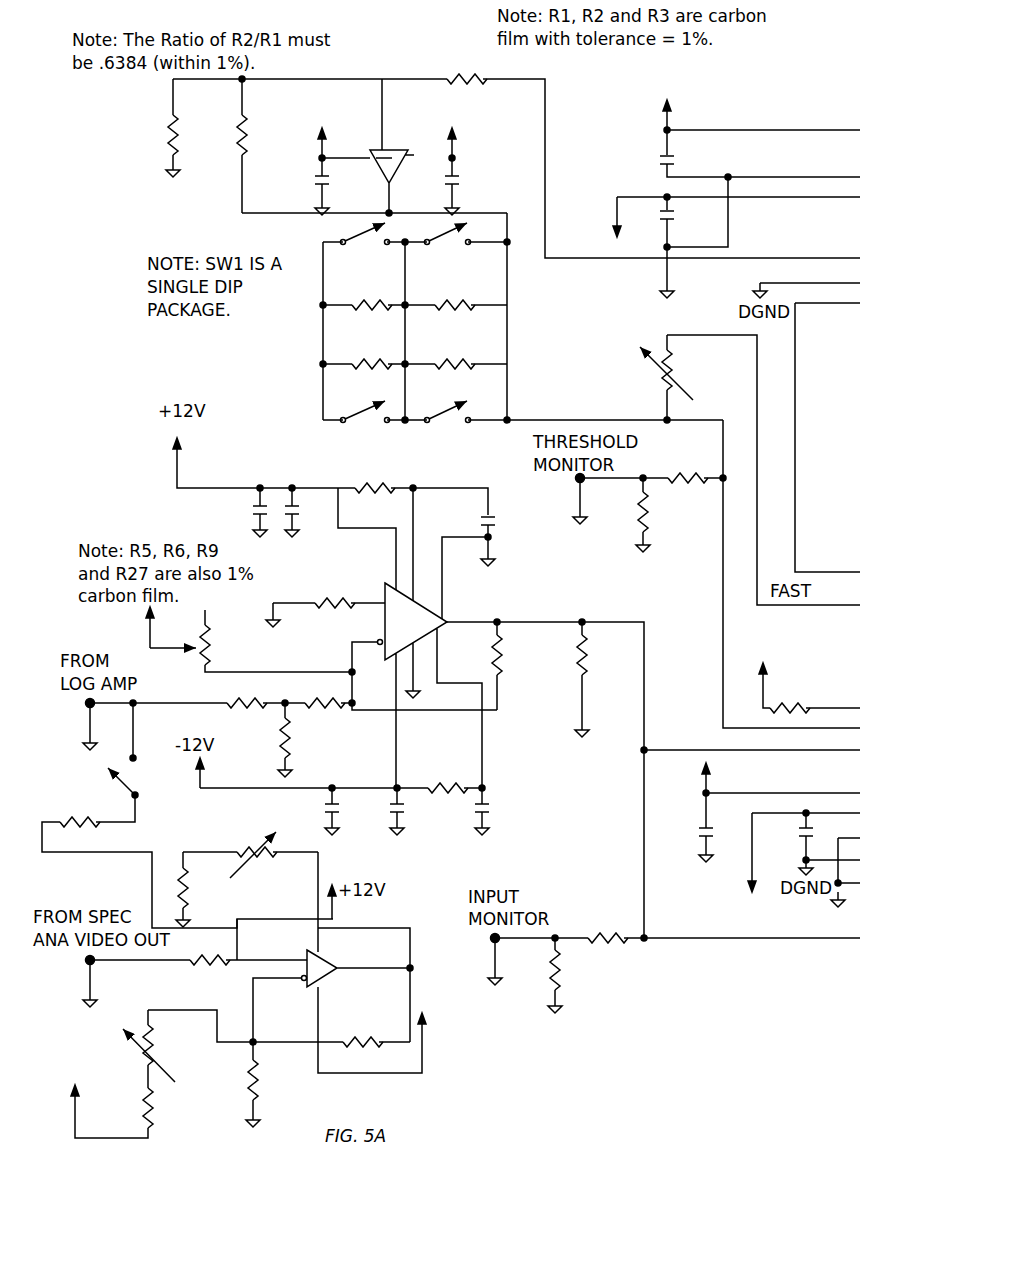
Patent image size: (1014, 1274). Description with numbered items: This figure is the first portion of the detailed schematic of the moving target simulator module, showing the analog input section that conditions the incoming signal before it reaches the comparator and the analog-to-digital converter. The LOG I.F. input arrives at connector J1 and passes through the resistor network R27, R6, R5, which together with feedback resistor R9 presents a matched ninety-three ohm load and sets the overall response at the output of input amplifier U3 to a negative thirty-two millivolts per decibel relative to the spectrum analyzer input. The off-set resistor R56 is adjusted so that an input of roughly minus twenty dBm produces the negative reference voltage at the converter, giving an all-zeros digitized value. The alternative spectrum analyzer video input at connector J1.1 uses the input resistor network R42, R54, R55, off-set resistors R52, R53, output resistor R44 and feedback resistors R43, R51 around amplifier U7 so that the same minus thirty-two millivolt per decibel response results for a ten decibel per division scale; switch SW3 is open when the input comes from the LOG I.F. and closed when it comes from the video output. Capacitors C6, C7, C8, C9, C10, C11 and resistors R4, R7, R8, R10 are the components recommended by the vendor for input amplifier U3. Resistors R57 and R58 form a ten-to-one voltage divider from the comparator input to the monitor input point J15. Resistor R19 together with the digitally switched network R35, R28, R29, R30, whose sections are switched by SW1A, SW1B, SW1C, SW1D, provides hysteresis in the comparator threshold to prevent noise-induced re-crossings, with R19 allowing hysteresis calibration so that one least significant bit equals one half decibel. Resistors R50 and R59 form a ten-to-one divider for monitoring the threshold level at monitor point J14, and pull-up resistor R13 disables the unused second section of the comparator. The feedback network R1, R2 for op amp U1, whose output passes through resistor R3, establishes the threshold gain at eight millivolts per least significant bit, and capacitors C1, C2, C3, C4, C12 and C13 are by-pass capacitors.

The feedback resistor R1 is at (150, 128).
The feedback resistor R2 is at (234, 146).
The resistor 390 R3 is at (467, 75).
The by-pass capacitor C1 is at (315, 158).
The by-pass capacitor C2 is at (456, 158).
The op amp U1 is at (372, 155).
The by-pass capacitor C3 is at (738, 171).
The by-pass capacitor C4 is at (710, 237).
The DIP switch section B SW1B is at (365, 259).
The DIP switch section A SW1A is at (447, 259).
The hysteresis resistor R28 is at (370, 328).
The hysteresis resistor R35 is at (453, 328).
The hysteresis resistor R29 is at (370, 376).
The hysteresis resistor R30 is at (453, 376).
The DIP switch section C SW1C is at (367, 426).
The DIP switch section D SW1D is at (451, 426).
The hysteresis calibration resistor R19 is at (716, 470).
The threshold monitor connector J14 is at (620, 499).
The voltage divider resistor R50 is at (695, 480).
The voltage divider resistor R59 is at (640, 513).
The capacitor C6 is at (243, 512).
The capacitor C7 is at (304, 512).
The resistor R7 is at (375, 488).
The capacitor C8 is at (501, 533).
The input amplifier U3 is at (450, 669).
The resistor R4 is at (325, 606).
The feedback resistor R9 is at (491, 664).
The resistor R10 is at (586, 678).
The off-set resistor R56 is at (249, 639).
The SMA input connector from log amp J1 is at (134, 716).
The load network resistor R27 is at (265, 706).
The load network resistor R5 is at (328, 706).
The load network resistor R6 is at (280, 740).
The switch SW3 is at (131, 762).
The output resistor R44 is at (226, 919).
The input resistor R54 is at (250, 852).
The input resistor R55 is at (187, 889).
The capacitor C9 is at (314, 810).
The capacitor C10 is at (378, 810).
The resistor R8 is at (448, 790).
The capacitor C11 is at (499, 810).
The SMA input connector from spectrum analyzer video out J1.1 is at (116, 980).
The input resistor R42 is at (248, 955).
The operational amplifier OPA602 U7 is at (359, 1002).
The feedback resistor R51 is at (331, 1043).
The feedback resistor R43 is at (253, 1083).
The off-set resistor R52 is at (182, 1049).
The off-set resistor R53 is at (123, 1101).
The monitor input point J15 is at (517, 958).
The voltage divider resistor R58 is at (722, 940).
The voltage divider resistor R57 is at (554, 974).
The pull-up resistor R13 is at (799, 687).
The by-pass capacitor C12 is at (760, 819).
The by-pass capacitor C13 is at (794, 861).